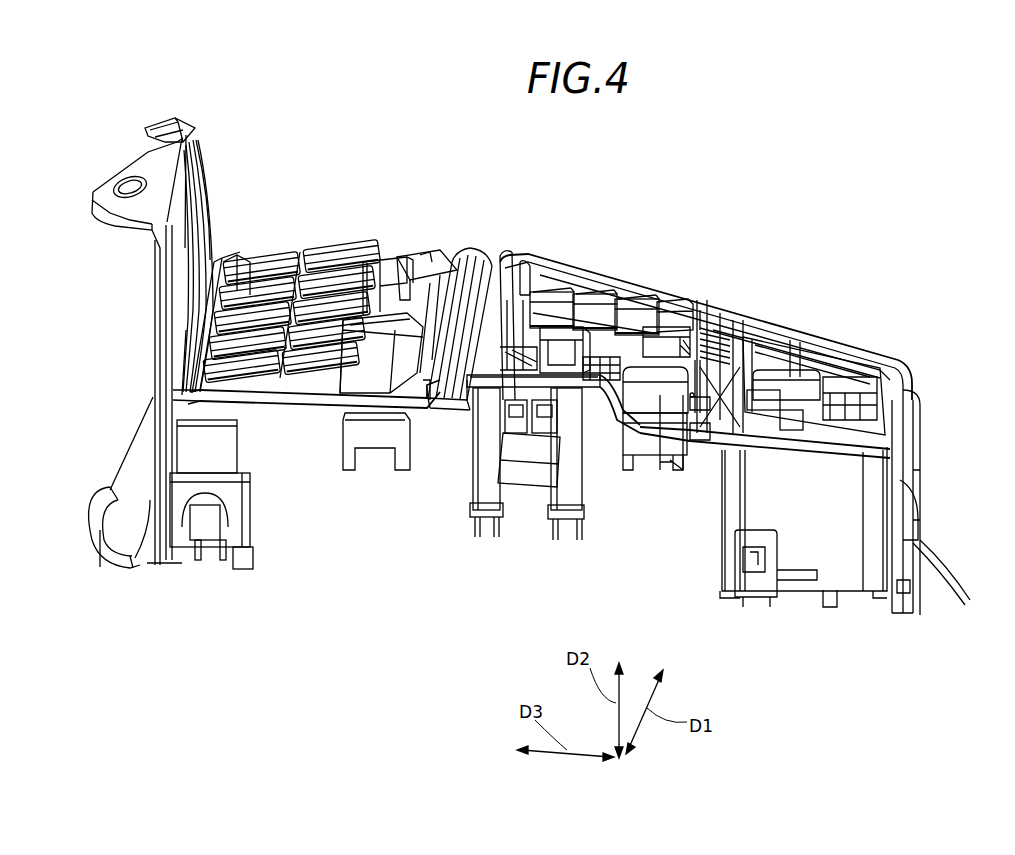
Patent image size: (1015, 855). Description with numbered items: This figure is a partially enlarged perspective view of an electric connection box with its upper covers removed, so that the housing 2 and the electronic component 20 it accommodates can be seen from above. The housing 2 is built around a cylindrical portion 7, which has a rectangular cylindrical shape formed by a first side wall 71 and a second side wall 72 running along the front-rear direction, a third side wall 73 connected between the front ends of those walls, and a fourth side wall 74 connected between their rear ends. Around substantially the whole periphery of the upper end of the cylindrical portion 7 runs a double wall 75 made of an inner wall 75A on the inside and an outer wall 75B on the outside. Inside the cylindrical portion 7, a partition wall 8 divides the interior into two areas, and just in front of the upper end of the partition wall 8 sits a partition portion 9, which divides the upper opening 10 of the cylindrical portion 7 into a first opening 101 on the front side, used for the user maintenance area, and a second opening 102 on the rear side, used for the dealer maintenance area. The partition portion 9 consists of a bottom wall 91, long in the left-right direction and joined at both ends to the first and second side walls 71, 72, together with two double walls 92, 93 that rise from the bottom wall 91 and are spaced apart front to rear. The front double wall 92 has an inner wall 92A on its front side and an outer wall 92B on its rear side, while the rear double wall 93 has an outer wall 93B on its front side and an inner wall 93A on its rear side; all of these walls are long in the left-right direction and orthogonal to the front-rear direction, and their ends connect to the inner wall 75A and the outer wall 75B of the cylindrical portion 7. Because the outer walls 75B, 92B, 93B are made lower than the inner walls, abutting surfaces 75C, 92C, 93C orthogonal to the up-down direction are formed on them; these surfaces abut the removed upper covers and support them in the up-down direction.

The housing 2 is at (168, 749).
The cylindrical portion 7 is at (722, 421).
The partition wall 8 is at (450, 272).
The partition portion 9 is at (350, 749).
The opening 10 is at (262, 746).
The electronic component 20 is at (272, 255).
The first side wall 71 is at (697, 487).
The second side wall 72 is at (763, 327).
The third side wall 73 is at (913, 463).
The fourth side wall 74 is at (180, 407).
The double wall 75 is at (281, 259).
The inner wall 75A is at (305, 256).
The outer wall 75B is at (350, 255).
The abutting surface 75C is at (313, 410).
The bottom wall 91 is at (507, 252).
The front double wall 92 is at (670, 344).
The inner wall 92A is at (533, 287).
The outer wall 92B is at (513, 260).
The abutting surface 92C is at (467, 437).
The rear double wall 93 is at (458, 293).
The inner wall 93A is at (455, 268).
The outer wall 93B is at (483, 262).
The abutting surface 93C is at (433, 403).
The first opening 101 is at (683, 310).
The second opening 102 is at (383, 262).